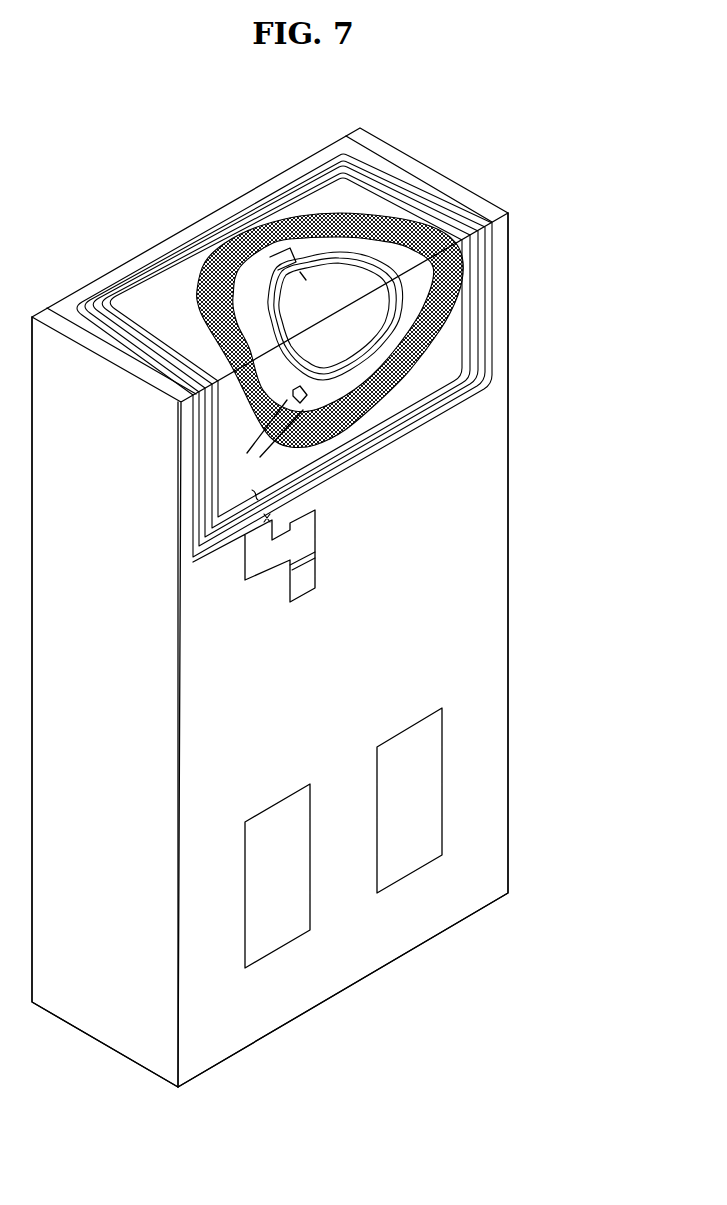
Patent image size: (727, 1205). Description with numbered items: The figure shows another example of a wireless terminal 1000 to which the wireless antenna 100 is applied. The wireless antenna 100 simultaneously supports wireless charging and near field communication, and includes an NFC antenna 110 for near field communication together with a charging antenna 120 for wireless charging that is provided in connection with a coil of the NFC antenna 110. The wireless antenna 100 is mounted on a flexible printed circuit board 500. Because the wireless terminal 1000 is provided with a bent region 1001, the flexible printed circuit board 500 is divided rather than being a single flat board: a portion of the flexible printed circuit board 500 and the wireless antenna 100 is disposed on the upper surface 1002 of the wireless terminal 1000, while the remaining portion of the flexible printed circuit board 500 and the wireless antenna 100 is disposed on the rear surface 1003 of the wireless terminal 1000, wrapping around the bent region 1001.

The wireless terminal 1000 is at (108, 156).
The bent region 1001 is at (381, 144).
The upper surface 1002 is at (482, 546).
The rear surface 1003 is at (503, 210).
The flexible printed circuit board 500 is at (494, 243).
The wireless antenna 100 is at (486, 327).
The NFC antenna 110 is at (362, 349).
The charging antenna 120 is at (302, 217).